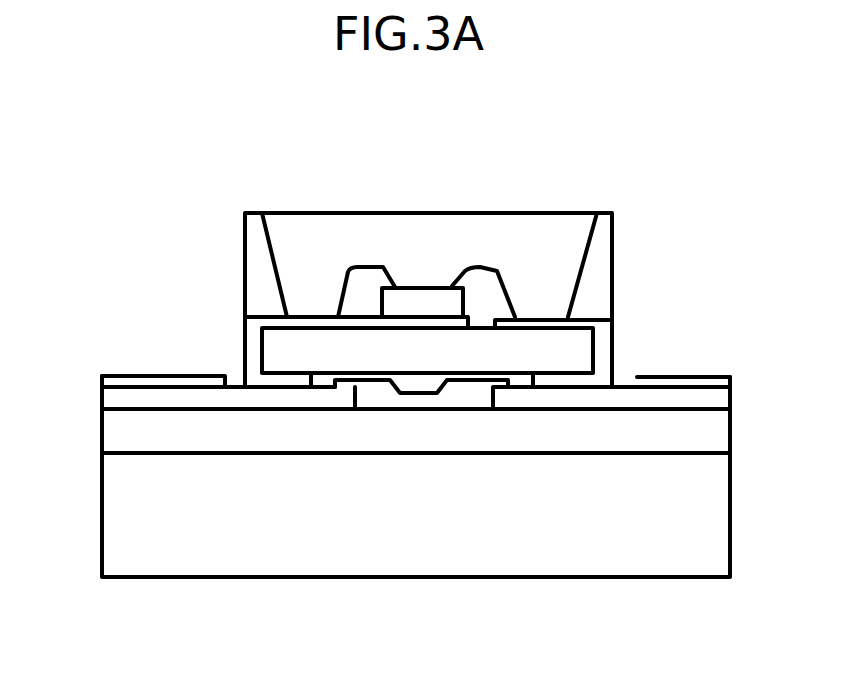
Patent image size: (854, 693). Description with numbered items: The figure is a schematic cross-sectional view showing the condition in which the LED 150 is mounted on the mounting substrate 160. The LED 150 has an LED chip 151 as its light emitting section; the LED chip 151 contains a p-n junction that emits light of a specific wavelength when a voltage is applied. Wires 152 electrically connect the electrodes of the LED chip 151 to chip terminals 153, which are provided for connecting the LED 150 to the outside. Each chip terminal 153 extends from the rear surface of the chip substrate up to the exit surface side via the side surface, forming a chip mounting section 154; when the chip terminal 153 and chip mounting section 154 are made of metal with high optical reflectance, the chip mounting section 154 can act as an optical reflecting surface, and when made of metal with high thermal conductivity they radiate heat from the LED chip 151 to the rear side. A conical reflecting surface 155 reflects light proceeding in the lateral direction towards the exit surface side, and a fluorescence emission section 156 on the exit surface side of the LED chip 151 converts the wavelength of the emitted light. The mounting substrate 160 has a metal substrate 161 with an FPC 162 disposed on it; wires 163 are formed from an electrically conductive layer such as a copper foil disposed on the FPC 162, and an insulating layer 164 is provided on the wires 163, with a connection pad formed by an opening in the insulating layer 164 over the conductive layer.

The LED 150 is at (595, 212).
The LED chip 151 is at (420, 298).
The wire 152 is at (492, 273).
The chip terminal 153 is at (568, 383).
The chip mounting section 154 is at (364, 322).
The conical reflecting surface 155 is at (257, 228).
The fluorescence emission section 156 is at (306, 248).
The mounting substrate 160 is at (186, 582).
The metal substrate 161 is at (356, 553).
The FPC 162 is at (545, 427).
The wire 163 is at (601, 402).
The insulating layer 164 is at (150, 376).